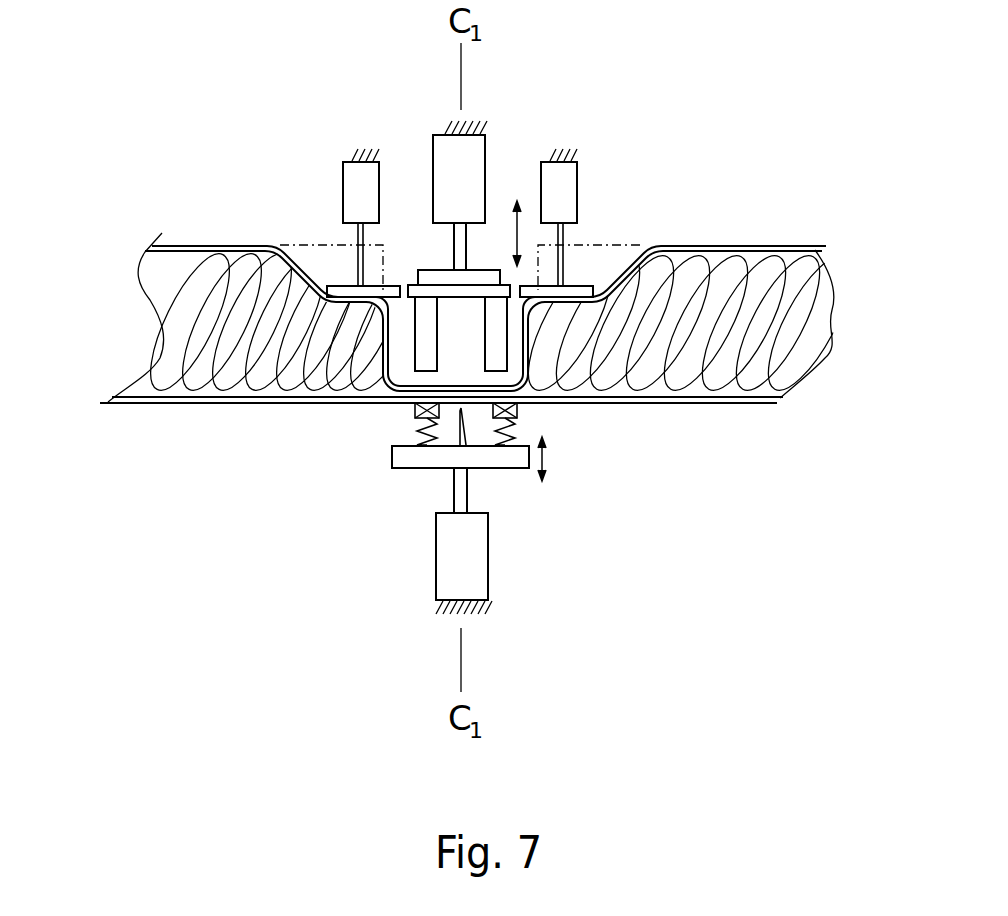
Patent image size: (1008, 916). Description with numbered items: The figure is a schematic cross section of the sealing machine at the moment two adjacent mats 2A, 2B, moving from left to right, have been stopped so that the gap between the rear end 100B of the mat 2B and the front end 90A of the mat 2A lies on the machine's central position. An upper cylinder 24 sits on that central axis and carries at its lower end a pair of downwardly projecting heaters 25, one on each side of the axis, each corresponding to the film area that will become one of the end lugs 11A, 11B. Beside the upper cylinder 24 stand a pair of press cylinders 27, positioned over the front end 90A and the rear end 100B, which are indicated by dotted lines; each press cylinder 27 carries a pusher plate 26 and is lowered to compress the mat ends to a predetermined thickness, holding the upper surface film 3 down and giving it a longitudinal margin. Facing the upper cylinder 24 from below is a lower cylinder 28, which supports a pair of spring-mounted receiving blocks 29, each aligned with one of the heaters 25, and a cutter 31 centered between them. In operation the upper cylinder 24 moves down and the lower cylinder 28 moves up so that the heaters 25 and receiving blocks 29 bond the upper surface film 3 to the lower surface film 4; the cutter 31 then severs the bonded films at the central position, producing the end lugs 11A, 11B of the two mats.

The mat 2A is at (183, 298).
The mat 2B is at (802, 303).
The upper surface film 3 is at (752, 246).
The lower surface film 4 is at (683, 403).
The end lug 11A is at (446, 376).
The end lug 11B is at (488, 376).
The upper cylinder 24 is at (440, 143).
The heater 25 is at (422, 353).
The pusher plate 26 is at (342, 290).
The press cylinder 27 is at (353, 178).
The lower cylinder 28 is at (453, 590).
The receiving block 29 is at (416, 411).
The cutter 31 is at (466, 439).
The front end 90A is at (313, 245).
The rear end 100B is at (627, 245).